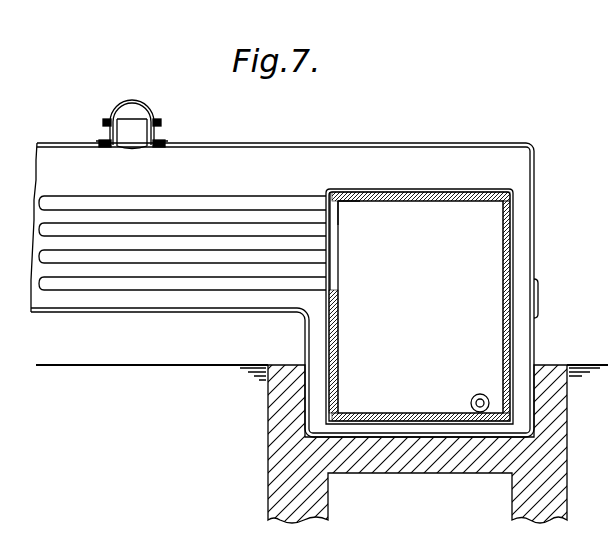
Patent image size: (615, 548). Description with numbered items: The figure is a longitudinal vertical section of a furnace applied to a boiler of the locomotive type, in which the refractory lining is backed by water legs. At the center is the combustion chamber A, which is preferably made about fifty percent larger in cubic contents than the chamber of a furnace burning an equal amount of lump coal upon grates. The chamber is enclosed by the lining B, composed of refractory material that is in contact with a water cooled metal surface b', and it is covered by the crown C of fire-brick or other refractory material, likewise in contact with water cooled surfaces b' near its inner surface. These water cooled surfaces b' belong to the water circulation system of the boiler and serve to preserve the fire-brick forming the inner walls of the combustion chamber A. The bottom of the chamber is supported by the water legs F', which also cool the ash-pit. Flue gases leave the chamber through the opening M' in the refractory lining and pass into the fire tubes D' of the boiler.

The combustion chamber A is at (447, 348).
The lining of the combustion chamber B is at (504, 227).
The water cooled metal surface b' is at (453, 253).
The crown of the combustion chamber C is at (382, 205).
The fire tubes D' is at (182, 227).
The water legs F' is at (421, 401).
The opening in the refractory lining M' is at (282, 290).